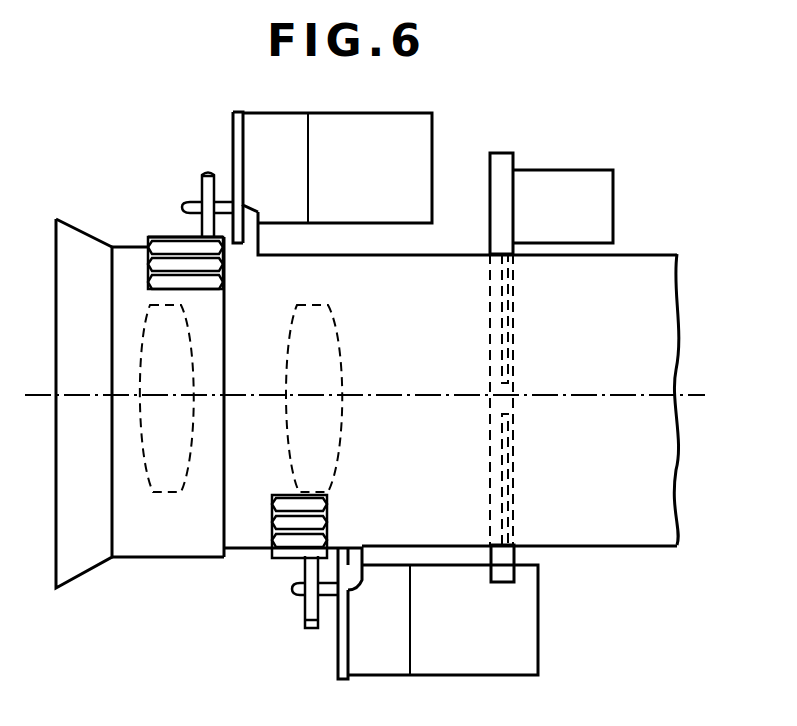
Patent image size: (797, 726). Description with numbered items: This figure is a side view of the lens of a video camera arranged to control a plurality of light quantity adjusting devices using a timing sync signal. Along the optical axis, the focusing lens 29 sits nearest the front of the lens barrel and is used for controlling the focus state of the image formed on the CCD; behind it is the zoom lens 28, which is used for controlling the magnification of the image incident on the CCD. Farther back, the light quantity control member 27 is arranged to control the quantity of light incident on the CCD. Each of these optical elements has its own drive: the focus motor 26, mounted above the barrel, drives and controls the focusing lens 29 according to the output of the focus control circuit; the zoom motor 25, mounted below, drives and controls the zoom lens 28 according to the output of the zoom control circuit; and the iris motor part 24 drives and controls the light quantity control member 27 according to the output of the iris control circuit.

The iris motor part 24 is at (583, 183).
The zoom motor 25 is at (508, 650).
The focus motor 26 is at (405, 137).
The light quantity control member 27 is at (513, 503).
The zoom lens 28 is at (287, 422).
The focusing lens 29 is at (165, 493).